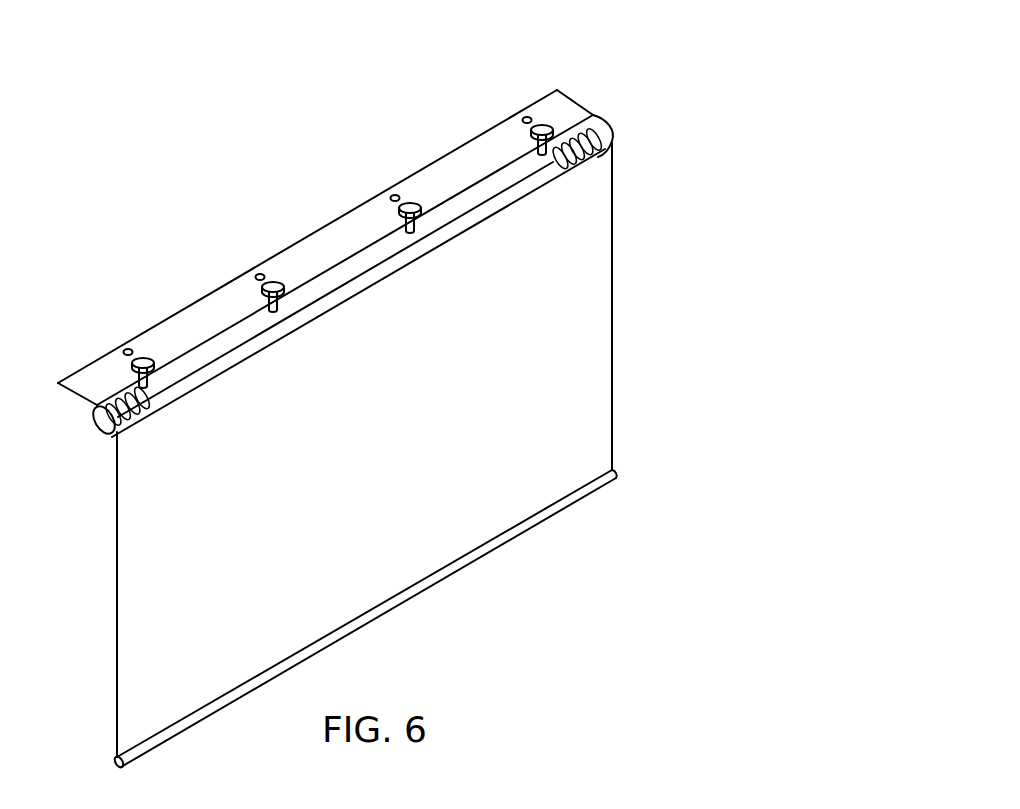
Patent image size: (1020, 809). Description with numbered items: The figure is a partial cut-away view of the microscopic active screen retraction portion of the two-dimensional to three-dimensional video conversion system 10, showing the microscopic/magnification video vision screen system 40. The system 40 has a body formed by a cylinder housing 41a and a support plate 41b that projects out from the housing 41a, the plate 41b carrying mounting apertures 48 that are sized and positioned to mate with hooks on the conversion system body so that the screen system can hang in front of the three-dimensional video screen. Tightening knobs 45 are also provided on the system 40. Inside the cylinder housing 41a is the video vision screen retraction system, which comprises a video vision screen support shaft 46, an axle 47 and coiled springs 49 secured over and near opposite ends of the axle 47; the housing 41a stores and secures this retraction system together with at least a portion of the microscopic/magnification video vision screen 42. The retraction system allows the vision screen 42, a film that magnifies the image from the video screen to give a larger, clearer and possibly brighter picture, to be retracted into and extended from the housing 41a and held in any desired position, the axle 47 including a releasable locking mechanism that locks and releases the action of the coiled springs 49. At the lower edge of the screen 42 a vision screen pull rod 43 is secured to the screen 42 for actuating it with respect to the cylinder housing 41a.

The roller screen assembly 10 is at (207, 192).
The microscopic/magnification video vision screen system 40 is at (305, 238).
The cylinder housing 41a is at (487, 178).
The support plate 41b is at (438, 172).
The microscopic/magnification video vision screen 42 is at (585, 272).
The vision screen pull rod 43 is at (614, 471).
The tightening knobs 45 is at (543, 123).
The video vision screen support shaft 46 is at (177, 358).
The axle 47 is at (252, 337).
The mounting apertures 48 is at (527, 116).
The coiled springs 49 is at (593, 115).